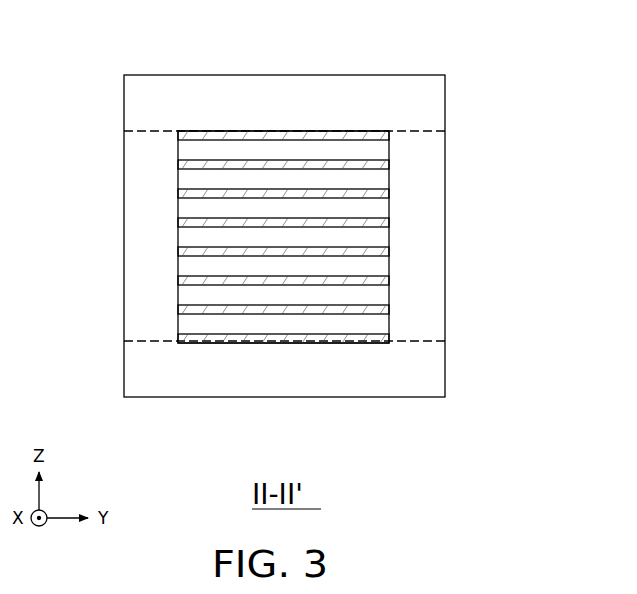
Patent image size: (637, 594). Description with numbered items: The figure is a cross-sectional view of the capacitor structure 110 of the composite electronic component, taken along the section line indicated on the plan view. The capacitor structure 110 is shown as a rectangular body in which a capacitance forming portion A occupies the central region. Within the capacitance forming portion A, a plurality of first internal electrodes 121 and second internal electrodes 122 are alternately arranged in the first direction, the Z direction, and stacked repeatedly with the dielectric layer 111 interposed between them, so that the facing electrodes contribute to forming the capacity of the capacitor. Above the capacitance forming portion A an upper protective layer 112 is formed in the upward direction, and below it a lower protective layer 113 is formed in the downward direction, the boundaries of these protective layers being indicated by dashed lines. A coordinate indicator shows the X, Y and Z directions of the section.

The capacitor structure 110 is at (338, 73).
The dielectric layer 111 is at (385, 147).
The upper protective layer 112 is at (437, 93).
The lower protective layer 113 is at (433, 370).
The first internal electrode 121 is at (389, 133).
The second internal electrode 122 is at (389, 166).
The capacitance forming portion A is at (176, 246).